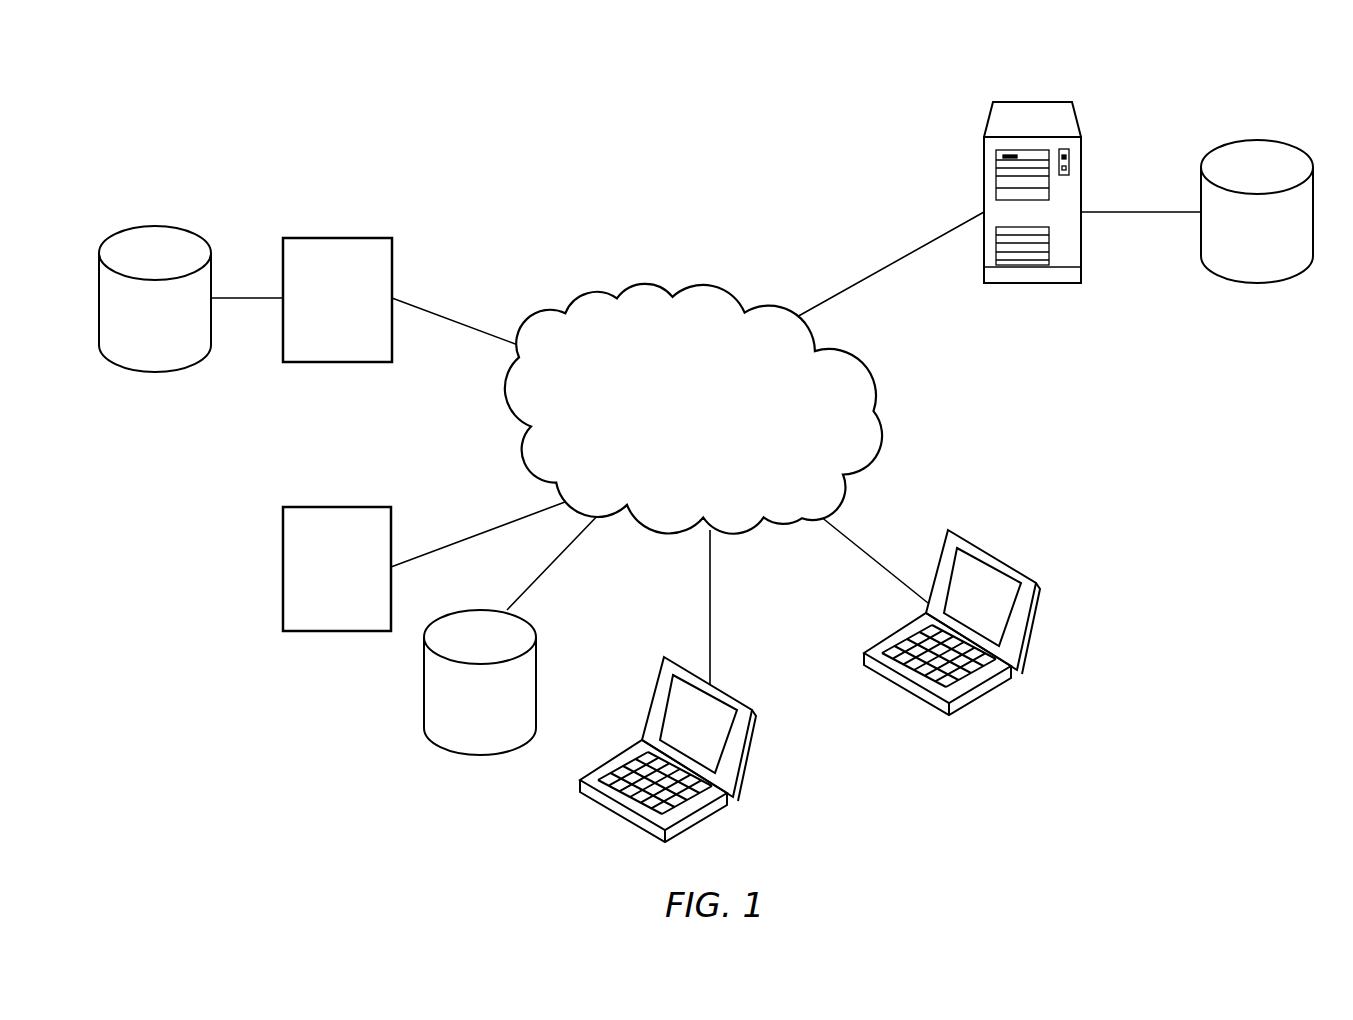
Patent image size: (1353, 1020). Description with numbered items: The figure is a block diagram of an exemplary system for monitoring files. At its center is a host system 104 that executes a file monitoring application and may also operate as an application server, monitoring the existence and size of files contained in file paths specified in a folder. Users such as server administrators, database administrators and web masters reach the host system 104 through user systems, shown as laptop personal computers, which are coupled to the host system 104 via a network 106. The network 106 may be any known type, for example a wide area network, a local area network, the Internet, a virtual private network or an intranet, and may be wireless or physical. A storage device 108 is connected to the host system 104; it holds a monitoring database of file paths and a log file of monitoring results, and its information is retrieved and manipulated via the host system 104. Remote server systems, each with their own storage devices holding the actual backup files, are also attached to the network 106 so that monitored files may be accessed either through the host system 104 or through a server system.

The host system 104 is at (1078, 117).
The network 106 is at (697, 284).
The storage device 108 is at (1252, 138).